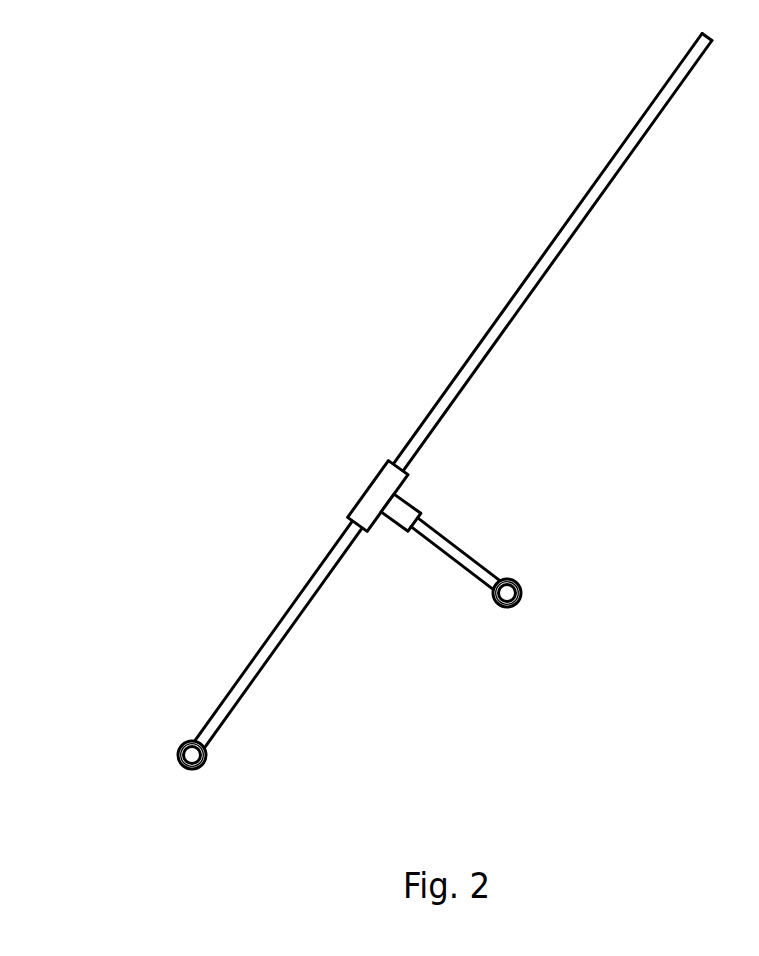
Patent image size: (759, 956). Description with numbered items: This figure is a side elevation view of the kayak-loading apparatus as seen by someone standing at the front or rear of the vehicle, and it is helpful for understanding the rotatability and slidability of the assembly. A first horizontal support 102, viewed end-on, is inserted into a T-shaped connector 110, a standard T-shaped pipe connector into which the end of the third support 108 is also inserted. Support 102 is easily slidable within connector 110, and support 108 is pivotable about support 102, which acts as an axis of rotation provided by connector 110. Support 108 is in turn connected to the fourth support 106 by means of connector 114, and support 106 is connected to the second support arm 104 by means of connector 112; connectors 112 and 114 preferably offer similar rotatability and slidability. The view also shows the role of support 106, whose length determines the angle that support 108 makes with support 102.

The first horizontal support 102 is at (123, 716).
The second support arm 104 is at (569, 549).
The fourth support 106 is at (478, 518).
The third support 108 is at (425, 391).
The T-shaped connector 110 is at (263, 793).
The connector 112 is at (587, 609).
The connector 114 is at (316, 469).